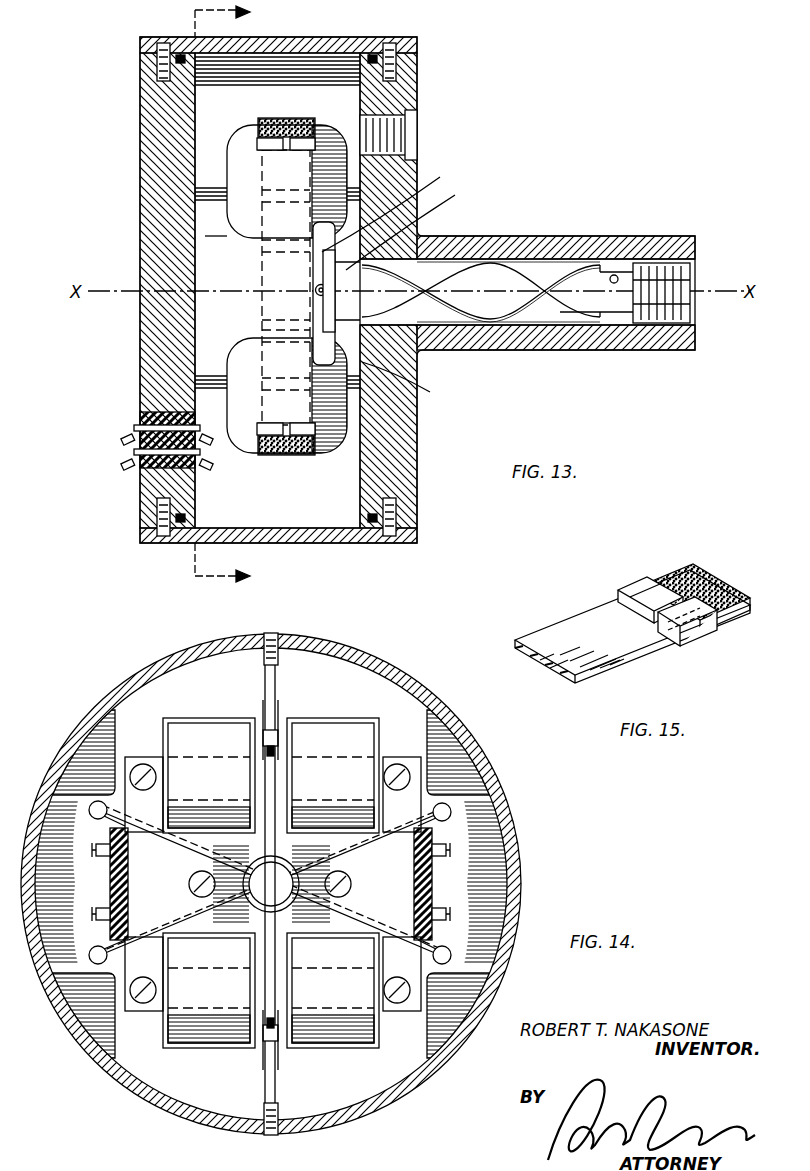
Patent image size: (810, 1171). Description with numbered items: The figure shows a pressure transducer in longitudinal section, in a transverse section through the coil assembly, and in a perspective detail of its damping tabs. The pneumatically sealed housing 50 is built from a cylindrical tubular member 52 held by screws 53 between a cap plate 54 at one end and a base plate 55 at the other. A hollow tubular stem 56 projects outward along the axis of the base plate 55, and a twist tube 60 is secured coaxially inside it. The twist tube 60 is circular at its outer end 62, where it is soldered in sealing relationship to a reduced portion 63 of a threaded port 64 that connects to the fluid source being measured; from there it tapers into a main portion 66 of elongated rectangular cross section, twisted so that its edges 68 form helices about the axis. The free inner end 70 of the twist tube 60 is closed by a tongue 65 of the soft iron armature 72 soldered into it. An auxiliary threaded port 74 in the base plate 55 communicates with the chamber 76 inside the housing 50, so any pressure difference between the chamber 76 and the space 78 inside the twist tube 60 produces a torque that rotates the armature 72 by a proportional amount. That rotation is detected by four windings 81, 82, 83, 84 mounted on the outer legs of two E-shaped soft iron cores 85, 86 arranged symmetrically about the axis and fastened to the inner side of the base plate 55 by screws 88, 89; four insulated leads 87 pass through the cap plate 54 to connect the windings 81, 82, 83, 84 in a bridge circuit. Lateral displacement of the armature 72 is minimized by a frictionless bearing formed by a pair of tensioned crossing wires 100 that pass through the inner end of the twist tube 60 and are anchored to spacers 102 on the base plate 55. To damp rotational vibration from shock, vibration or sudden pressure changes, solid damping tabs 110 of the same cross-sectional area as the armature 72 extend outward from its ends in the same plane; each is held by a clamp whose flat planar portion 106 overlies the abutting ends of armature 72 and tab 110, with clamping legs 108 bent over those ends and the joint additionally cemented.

In FIG. 13, the housing 50 is at (355, 29).
In FIG. 13, the cylindrical tubular member 52 is at (310, 63).
In FIG. 13, the screws 53 is at (160, 42).
In FIG. 14, the screws 53 is at (280, 652).
In FIG. 13, the cap plate 54 is at (146, 192).
In FIG. 13, the base plate 55 is at (388, 428).
In FIG. 14, the base plate 55 is at (86, 923).
In FIG. 13, the tubular stem 56 is at (553, 350).
In FIG. 13, the twist tube 60 is at (572, 274).
In FIG. 13, the outer end of twist tube 62 is at (650, 300).
In FIG. 13, the reduced portion 63 is at (612, 275).
In FIG. 13, the threaded port 64 is at (694, 271).
In FIG. 13, the tongue 65 is at (376, 249).
In FIG. 13, the main portion of twist tube 66 is at (481, 292).
In FIG. 13, the edges 68 is at (562, 310).
In FIG. 13, the free inner end 70 is at (349, 293).
In FIG. 13, the armature 72 is at (282, 265).
In FIG. 14, the armature 72 is at (280, 832).
In FIG. 15, the armature 72 is at (535, 634).
In FIG. 13, the auxiliary threaded port 74 is at (398, 135).
In FIG. 13, the chamber 76 is at (205, 236).
In FIG. 14, the chamber 76 is at (405, 716).
In FIG. 13, the space within twist tube 78 is at (366, 353).
In FIG. 13, the winding 81 is at (232, 142).
In FIG. 14, the winding 81 is at (195, 724).
In FIG. 14, the winding 82 is at (332, 724).
In FIG. 13, the winding 83 is at (322, 452).
In FIG. 14, the winding 83 is at (217, 1034).
In FIG. 14, the winding 84 is at (340, 1038).
In FIG. 13, the E-shaped magnetic core 85 is at (262, 325).
In FIG. 14, the E-shaped magnetic core 85 is at (140, 883).
In FIG. 14, the E-shaped magnetic core 86 is at (398, 881).
In FIG. 13, the insulated leads 87 is at (150, 445).
In FIG. 14, the screw 88 is at (196, 877).
In FIG. 14, the screw 89 is at (350, 890).
In FIG. 13, the tensioned crossing wires 100 is at (417, 227).
In FIG. 14, the tensioned crossing wires 100 is at (452, 814).
In FIG. 13, the spacers 102 is at (398, 286).
In FIG. 14, the spacers 102 is at (447, 810).
In FIG. 13, the flat planar portion 106 is at (276, 162).
In FIG. 14, the flat planar portion 106 is at (265, 750).
In FIG. 15, the flat planar portion 106 is at (665, 648).
In FIG. 13, the clamping legs 108 is at (270, 130).
In FIG. 14, the clamping legs 108 is at (267, 730).
In FIG. 15, the clamping legs 108 is at (652, 578).
In FIG. 13, the damping tabs 110 is at (297, 121).
In FIG. 14, the damping tabs 110 is at (278, 726).
In FIG. 15, the damping tabs 110 is at (715, 586).